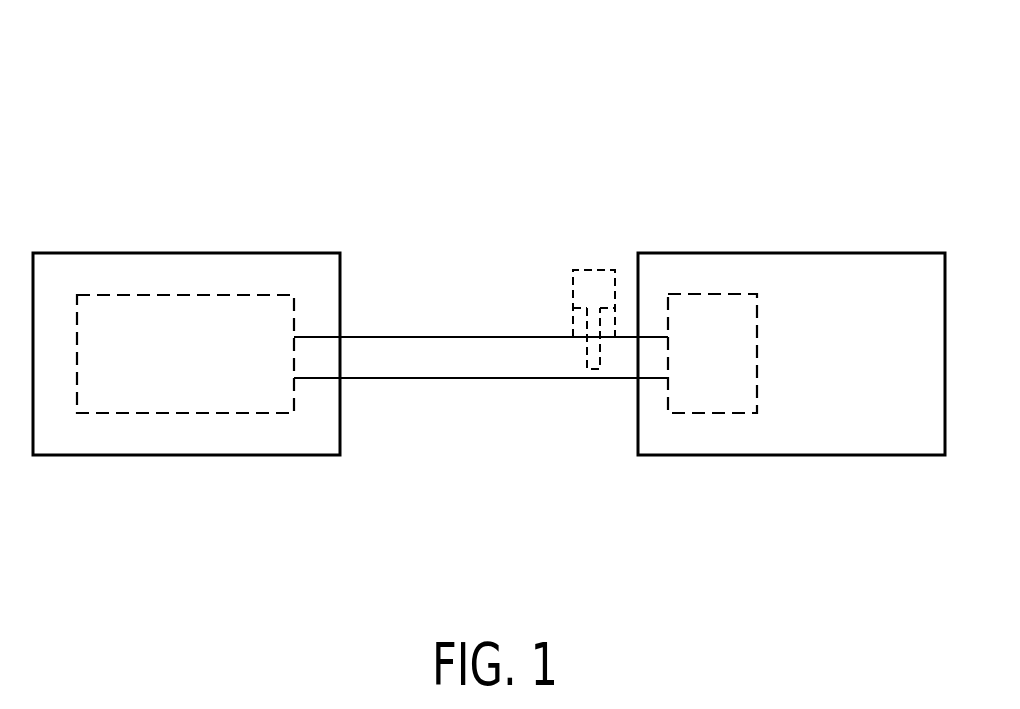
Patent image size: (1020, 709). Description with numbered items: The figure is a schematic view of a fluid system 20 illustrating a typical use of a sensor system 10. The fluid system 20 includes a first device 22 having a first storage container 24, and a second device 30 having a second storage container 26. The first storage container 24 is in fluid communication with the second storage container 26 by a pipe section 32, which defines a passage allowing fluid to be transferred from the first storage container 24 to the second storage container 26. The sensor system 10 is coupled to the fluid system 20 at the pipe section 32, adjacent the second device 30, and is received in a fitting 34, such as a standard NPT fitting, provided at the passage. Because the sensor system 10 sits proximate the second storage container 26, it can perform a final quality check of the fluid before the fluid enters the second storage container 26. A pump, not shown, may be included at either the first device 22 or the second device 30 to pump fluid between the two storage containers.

The sensor system 10 is at (546, 274).
The fluid system 20 is at (358, 127).
The first device 22 is at (303, 455).
The first storage container 24 is at (202, 413).
The second storage container 26 is at (713, 413).
The second device 30 is at (806, 253).
The pipe section 32 is at (466, 378).
The fitting 34 is at (573, 327).